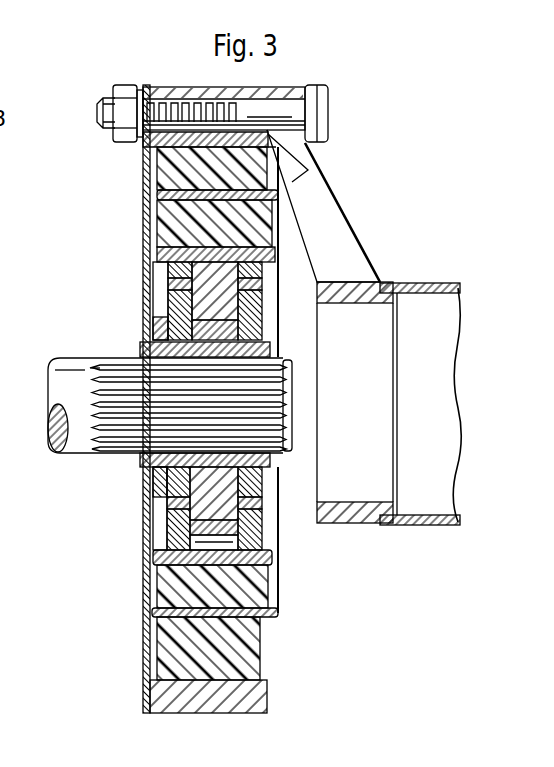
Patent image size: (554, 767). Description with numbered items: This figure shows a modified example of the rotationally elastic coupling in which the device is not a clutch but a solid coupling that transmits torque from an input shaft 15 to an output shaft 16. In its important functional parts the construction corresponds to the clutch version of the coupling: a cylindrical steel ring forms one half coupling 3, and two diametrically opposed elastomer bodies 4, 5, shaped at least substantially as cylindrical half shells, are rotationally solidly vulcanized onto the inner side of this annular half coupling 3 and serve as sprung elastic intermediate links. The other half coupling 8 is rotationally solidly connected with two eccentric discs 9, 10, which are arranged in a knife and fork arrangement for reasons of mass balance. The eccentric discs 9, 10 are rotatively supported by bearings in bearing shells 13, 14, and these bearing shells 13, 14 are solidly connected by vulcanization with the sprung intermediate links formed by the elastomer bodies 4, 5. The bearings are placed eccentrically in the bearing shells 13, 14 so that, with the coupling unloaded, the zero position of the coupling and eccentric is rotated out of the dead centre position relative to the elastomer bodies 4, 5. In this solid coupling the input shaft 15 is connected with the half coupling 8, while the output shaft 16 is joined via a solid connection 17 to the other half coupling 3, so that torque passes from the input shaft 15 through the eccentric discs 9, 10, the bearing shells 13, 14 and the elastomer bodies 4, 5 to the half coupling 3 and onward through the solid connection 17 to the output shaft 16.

The half coupling 3 is at (257, 702).
The elastomer body 4 is at (167, 223).
The elastomer body 5 is at (242, 662).
The second half coupling 8 is at (141, 350).
The eccentric disc 9 is at (247, 308).
The eccentric disc 10 is at (200, 503).
The bearing shell 13 is at (200, 298).
The bearing shell 14 is at (257, 538).
The input shaft 15 is at (63, 392).
The output shaft 16 is at (432, 283).
The solid connection 17 is at (337, 222).